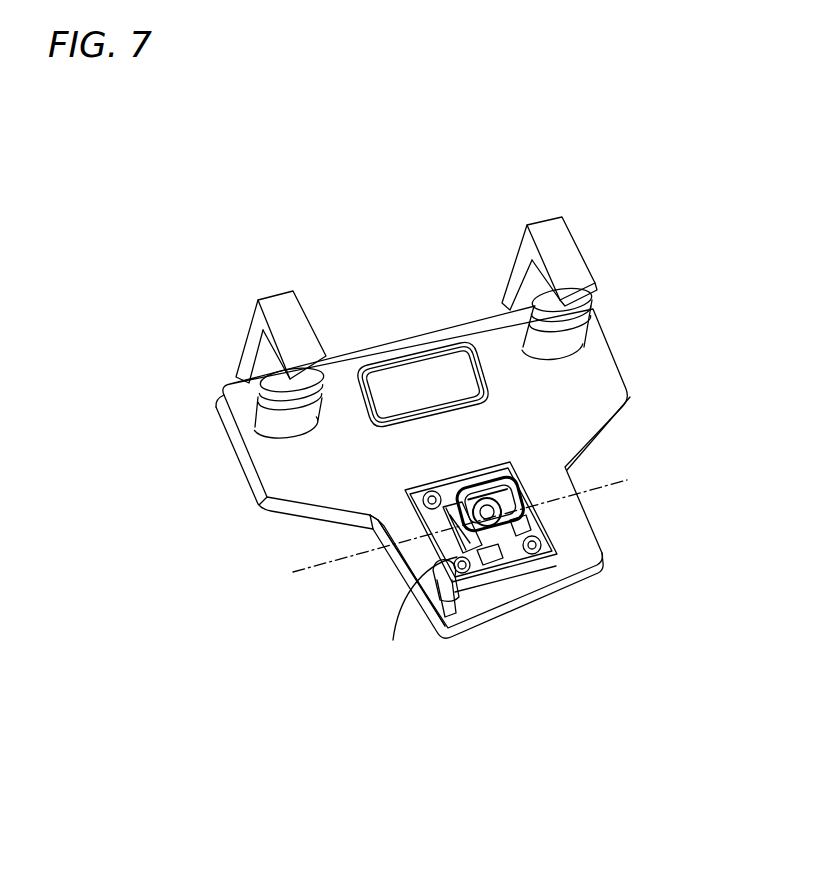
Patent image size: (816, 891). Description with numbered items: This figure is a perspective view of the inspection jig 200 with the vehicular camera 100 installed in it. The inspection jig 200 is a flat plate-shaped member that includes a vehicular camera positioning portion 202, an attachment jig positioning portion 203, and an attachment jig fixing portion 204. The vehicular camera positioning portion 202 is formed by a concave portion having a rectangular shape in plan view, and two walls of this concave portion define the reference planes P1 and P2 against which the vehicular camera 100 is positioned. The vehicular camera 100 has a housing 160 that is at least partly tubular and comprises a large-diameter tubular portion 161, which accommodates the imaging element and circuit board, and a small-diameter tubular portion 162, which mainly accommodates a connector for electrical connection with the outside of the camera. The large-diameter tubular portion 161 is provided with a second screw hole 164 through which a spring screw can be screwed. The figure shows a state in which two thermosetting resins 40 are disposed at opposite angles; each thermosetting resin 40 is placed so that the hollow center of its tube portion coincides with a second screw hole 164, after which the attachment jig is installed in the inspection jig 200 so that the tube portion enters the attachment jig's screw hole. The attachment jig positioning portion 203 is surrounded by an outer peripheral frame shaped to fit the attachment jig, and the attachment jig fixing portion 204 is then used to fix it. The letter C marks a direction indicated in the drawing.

The inspection jig 200 is at (374, 206).
The attachment jig fixing portion 204 is at (255, 325).
The attachment jig positioning portion 203 is at (423, 383).
The vehicular camera positioning portion 202 is at (440, 522).
The thermosetting resin 40 is at (566, 468).
The rotation direction C is at (609, 485).
The vehicular camera 100 is at (538, 567).
The second screw hole 164 is at (425, 500).
The housing 160 is at (524, 637).
The large-diameter tubular portion 161 is at (533, 575).
The small-diameter tubular portion 162 is at (488, 562).
The reference plane P1 is at (516, 470).
The reference plane P2 is at (512, 460).